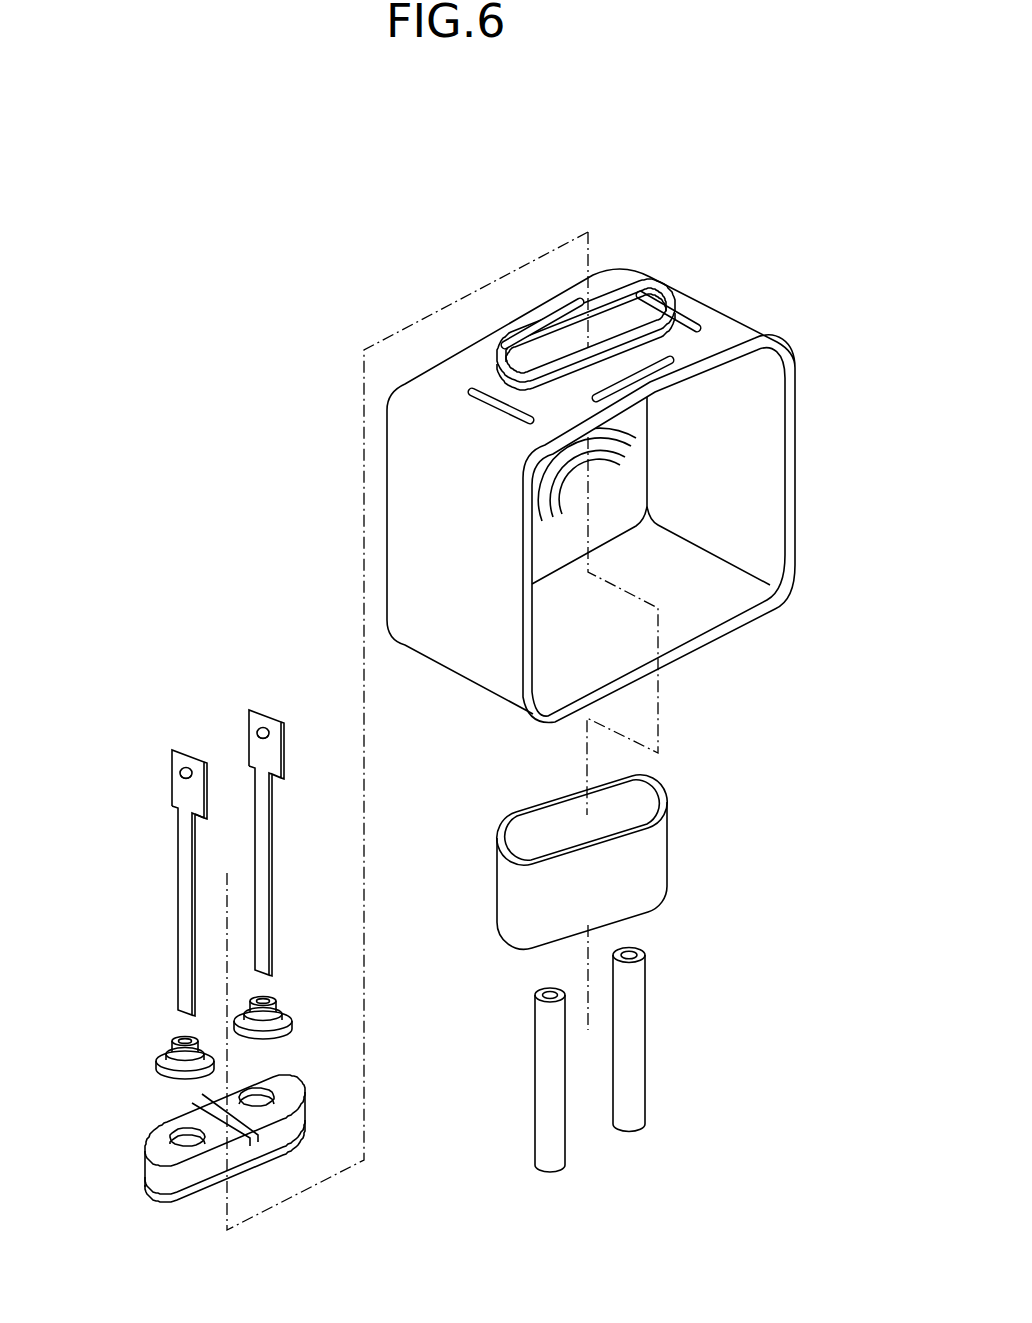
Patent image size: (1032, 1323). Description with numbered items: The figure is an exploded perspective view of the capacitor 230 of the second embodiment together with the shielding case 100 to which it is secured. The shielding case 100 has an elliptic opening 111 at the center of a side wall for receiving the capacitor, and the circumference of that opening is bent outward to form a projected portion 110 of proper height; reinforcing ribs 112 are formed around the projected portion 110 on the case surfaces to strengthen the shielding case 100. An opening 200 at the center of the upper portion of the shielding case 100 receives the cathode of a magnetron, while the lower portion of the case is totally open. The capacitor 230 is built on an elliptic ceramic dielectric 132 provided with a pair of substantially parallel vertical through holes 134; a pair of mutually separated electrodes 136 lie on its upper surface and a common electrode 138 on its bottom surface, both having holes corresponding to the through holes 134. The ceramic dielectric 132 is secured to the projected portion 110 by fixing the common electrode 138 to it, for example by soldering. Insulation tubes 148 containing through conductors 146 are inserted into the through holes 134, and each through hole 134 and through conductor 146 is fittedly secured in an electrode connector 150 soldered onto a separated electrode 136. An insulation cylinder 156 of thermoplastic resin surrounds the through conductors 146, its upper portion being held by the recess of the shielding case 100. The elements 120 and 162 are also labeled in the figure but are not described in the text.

The shielding case 100 is at (794, 457).
The projected portion 110 is at (665, 312).
The elliptic opening 111 is at (613, 327).
The reinforcing ribs 112 is at (470, 390).
The slot 120 is at (665, 367).
The opening 200 is at (543, 488).
The insulation cylinder 156 is at (648, 860).
The insulation tube 148 is at (636, 1050).
The through conductor 146 is at (177, 918).
The terminal tab 162 is at (175, 751).
The electrode connector 150 is at (167, 1057).
The ceramic dielectric 132 is at (153, 1177).
The through holes 134 is at (180, 1141).
The separated electrodes 136 is at (153, 1137).
The common electrode 138 is at (191, 1203).
The capacitor 230 is at (393, 1167).